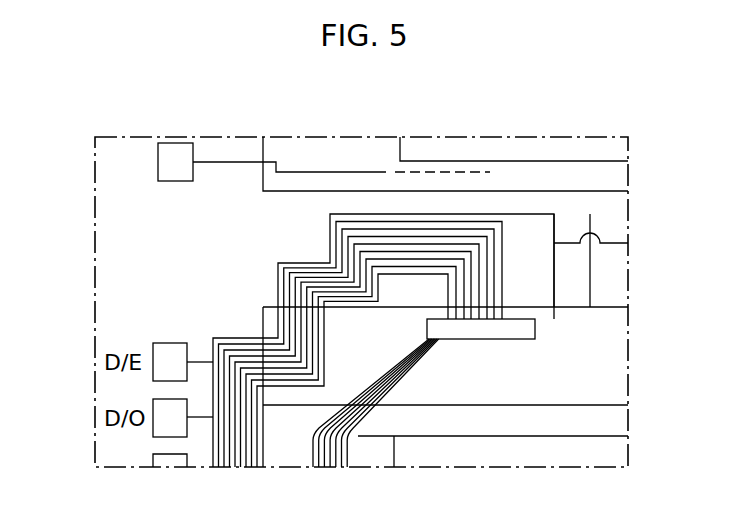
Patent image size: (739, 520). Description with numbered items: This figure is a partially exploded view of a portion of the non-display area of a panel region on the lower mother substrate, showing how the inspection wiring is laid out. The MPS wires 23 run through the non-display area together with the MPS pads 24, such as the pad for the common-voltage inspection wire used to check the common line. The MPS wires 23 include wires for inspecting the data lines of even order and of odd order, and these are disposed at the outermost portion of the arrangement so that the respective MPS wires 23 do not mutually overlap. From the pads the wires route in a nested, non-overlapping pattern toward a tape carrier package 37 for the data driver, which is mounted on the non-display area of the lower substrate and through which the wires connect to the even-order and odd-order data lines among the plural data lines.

The MPS wires 23 is at (222, 337).
The MPS pads 24 is at (158, 163).
The tape carrier package 37 is at (520, 331).